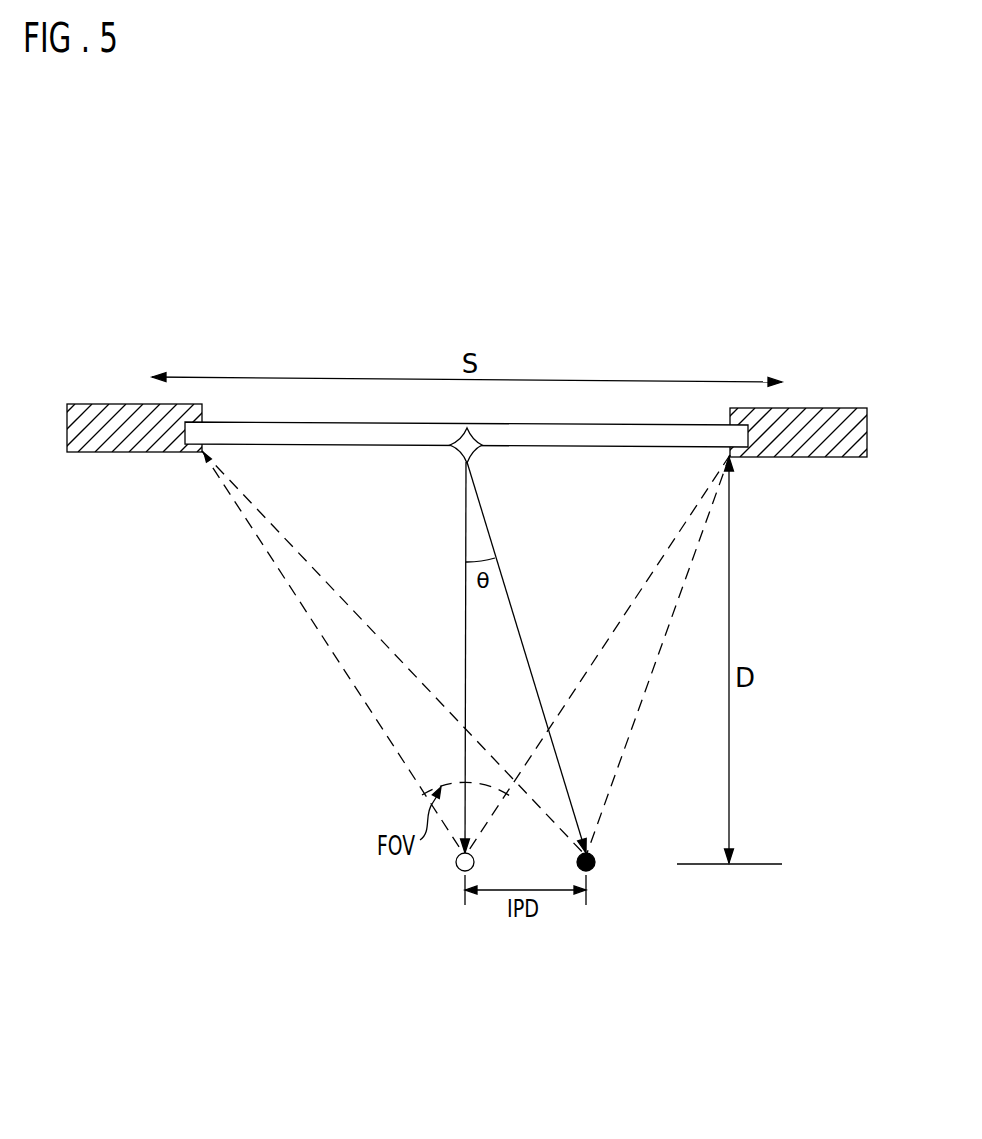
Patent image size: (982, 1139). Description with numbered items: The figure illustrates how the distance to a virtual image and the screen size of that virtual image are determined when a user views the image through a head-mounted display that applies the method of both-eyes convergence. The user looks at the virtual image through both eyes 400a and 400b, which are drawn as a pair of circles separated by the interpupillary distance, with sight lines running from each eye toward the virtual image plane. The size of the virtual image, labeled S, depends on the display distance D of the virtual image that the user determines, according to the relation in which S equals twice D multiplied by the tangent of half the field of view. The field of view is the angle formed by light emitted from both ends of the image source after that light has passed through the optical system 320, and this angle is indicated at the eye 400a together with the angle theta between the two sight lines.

The optical system 320 is at (706, 315).
The eye 400a is at (442, 879).
The eye 400b is at (611, 883).